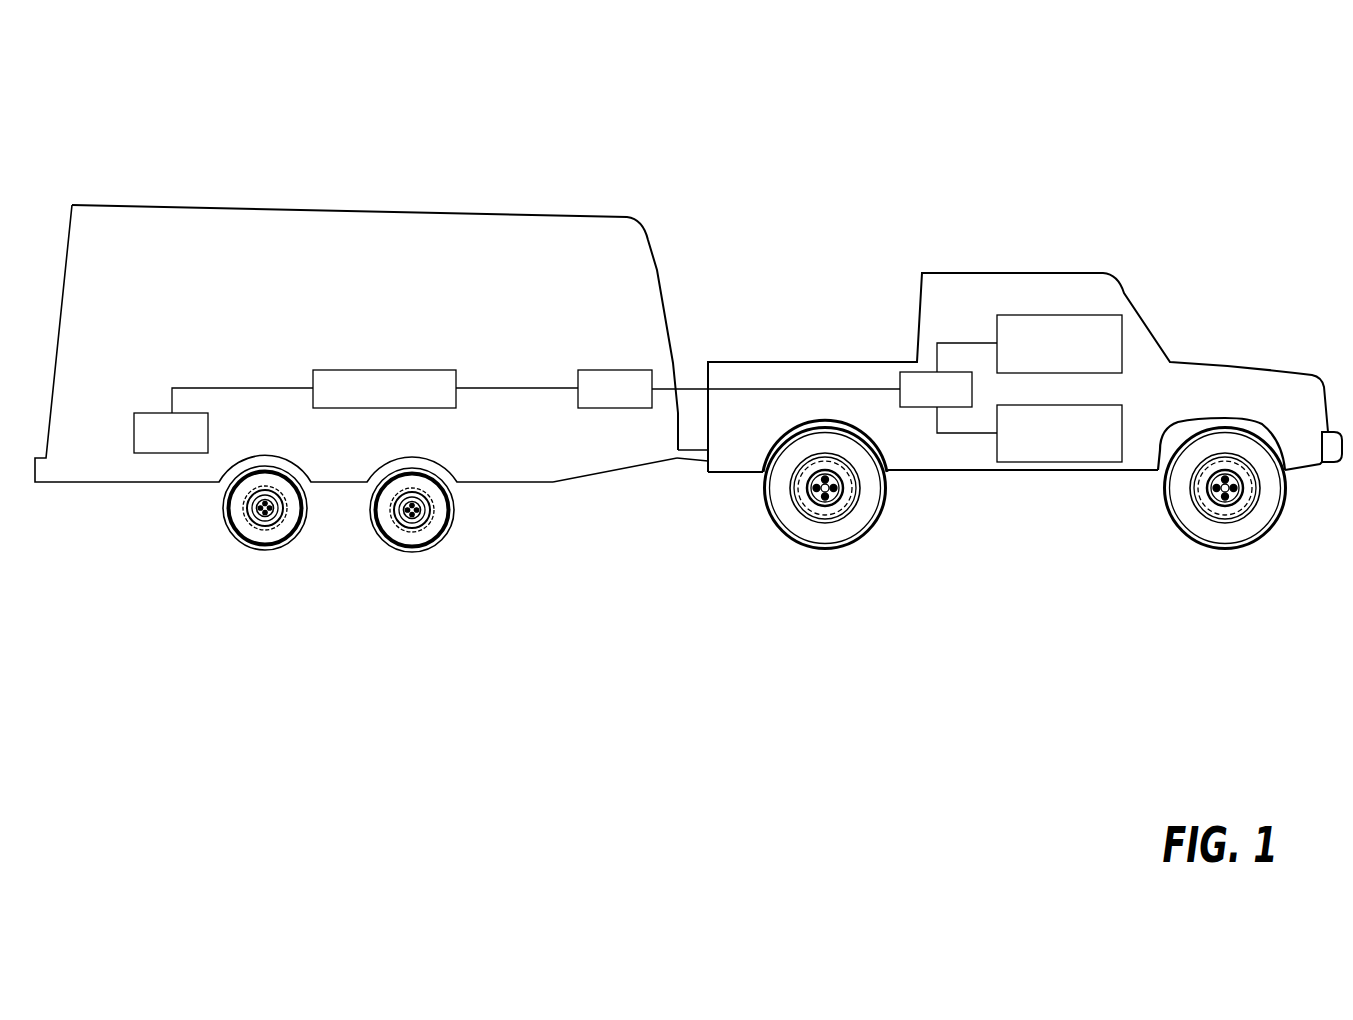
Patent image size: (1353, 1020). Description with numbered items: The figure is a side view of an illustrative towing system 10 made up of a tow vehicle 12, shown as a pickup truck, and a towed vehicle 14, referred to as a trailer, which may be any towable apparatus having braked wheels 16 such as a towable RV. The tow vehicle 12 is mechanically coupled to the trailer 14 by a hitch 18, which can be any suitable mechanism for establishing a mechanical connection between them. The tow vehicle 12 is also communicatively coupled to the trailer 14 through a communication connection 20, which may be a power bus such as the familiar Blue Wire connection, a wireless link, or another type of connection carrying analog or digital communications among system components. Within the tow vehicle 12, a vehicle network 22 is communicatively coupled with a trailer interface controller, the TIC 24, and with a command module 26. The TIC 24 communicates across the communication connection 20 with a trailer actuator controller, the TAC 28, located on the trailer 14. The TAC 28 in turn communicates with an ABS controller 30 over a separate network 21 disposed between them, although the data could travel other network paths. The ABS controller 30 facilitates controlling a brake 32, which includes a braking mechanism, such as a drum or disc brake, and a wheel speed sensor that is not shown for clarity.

The towing system 10 is at (1124, 140).
The tow vehicle 12 is at (1052, 273).
The towed vehicle 14 is at (577, 218).
The braked wheels 16 is at (280, 547).
The hitch 18 is at (693, 463).
The communication connection 20 is at (685, 390).
The network 21 is at (518, 388).
The vehicle network 22 is at (1058, 462).
The TIC 24 is at (918, 407).
The command module 26 is at (1123, 338).
The trailer actuator controller 28 is at (625, 370).
The ABS controller 30 is at (423, 370).
The brake 32 is at (146, 413).